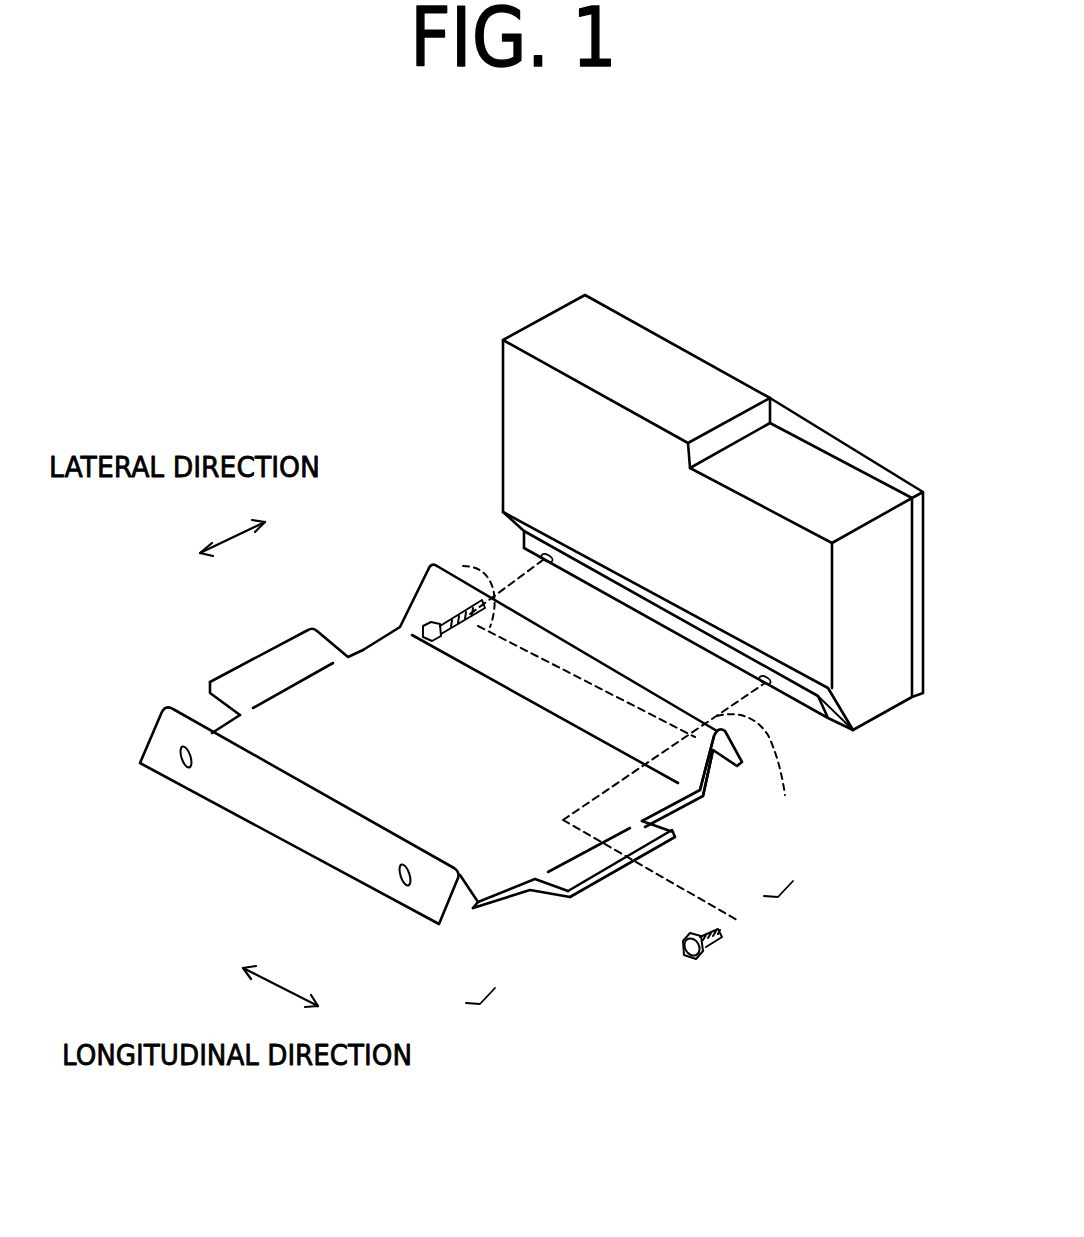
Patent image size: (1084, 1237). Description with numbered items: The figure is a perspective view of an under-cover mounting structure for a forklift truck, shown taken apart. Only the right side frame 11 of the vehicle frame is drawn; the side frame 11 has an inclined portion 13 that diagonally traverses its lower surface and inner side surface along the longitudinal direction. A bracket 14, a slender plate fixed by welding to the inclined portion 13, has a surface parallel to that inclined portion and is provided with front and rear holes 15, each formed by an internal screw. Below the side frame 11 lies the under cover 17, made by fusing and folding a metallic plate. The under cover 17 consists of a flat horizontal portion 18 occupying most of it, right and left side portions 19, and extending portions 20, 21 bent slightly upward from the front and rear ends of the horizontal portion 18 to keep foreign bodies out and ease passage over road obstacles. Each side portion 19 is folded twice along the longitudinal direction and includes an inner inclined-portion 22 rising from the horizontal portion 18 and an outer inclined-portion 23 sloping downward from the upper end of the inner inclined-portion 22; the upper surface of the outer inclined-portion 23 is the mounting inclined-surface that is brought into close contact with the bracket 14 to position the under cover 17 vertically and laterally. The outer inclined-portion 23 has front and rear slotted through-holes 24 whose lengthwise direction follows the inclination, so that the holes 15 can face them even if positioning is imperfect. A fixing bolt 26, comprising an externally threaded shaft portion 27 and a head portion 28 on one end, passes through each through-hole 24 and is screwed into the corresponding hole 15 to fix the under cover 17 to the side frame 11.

The side frame 11 is at (713, 352).
The inclined portion 13 is at (830, 712).
The bracket 14 is at (650, 605).
The hole 15 is at (543, 556).
The under cover 17 is at (472, 752).
The horizontal portion 18 is at (497, 855).
The side portion 19 is at (640, 949).
The extending portion 20 is at (281, 667).
The extending portion 21 is at (590, 880).
The inner inclined-portion 22 is at (470, 895).
The outer inclined-portion 23 is at (422, 906).
The through-hole 24 is at (184, 762).
The fixing bolt 26 is at (575, 784).
The shaft portion 27 is at (714, 948).
The head portion 28 is at (692, 962).